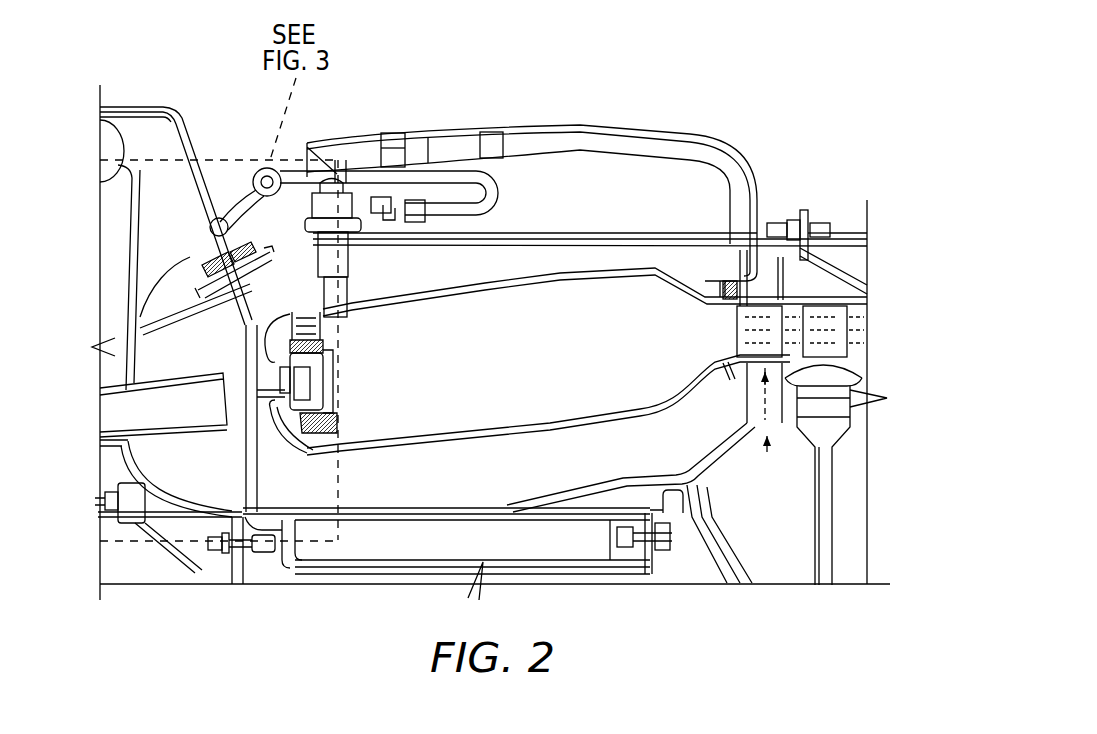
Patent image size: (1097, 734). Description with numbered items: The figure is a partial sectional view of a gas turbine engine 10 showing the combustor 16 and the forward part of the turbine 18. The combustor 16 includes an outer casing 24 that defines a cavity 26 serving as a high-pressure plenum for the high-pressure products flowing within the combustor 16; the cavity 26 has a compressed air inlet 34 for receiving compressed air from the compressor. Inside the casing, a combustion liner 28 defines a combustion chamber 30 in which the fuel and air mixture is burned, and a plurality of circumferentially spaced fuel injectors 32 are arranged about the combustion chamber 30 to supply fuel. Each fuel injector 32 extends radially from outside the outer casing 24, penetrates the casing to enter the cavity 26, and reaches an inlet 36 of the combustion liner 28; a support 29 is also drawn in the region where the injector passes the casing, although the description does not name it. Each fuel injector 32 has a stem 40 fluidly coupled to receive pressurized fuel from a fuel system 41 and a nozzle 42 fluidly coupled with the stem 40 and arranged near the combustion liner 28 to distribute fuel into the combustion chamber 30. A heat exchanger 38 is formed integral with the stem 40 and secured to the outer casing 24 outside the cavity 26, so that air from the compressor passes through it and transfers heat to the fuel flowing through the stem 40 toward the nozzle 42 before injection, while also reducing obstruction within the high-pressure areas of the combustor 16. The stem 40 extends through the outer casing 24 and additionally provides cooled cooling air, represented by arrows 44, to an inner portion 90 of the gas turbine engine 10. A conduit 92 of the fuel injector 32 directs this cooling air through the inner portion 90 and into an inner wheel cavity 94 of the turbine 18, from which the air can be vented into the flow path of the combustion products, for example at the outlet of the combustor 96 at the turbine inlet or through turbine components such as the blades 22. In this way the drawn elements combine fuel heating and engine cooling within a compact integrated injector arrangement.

The gas turbine engine 10 is at (858, 92).
The combustor 16 is at (610, 195).
The turbine 18 is at (840, 200).
The blades 22 is at (858, 324).
The outer casing 24 is at (552, 228).
The cavity 26 is at (450, 280).
The combustion liner 28 is at (622, 262).
The support bracket 29 is at (352, 258).
The combustion chamber 30 is at (610, 382).
The fuel injector 32 is at (206, 158).
The compressed air inlet 34 is at (132, 407).
The inlet of the combustion liner 36 is at (265, 522).
The heat exchanger 38 is at (195, 266).
The stem 40 is at (202, 237).
The fuel system 41 is at (290, 172).
The nozzle 42 is at (334, 360).
The cooling air 44 is at (250, 466).
The inner portion 90 is at (440, 543).
The conduit 92 is at (248, 458).
The inner wheel cavity 94 is at (788, 421).
The outlet of combustor 96 is at (765, 288).